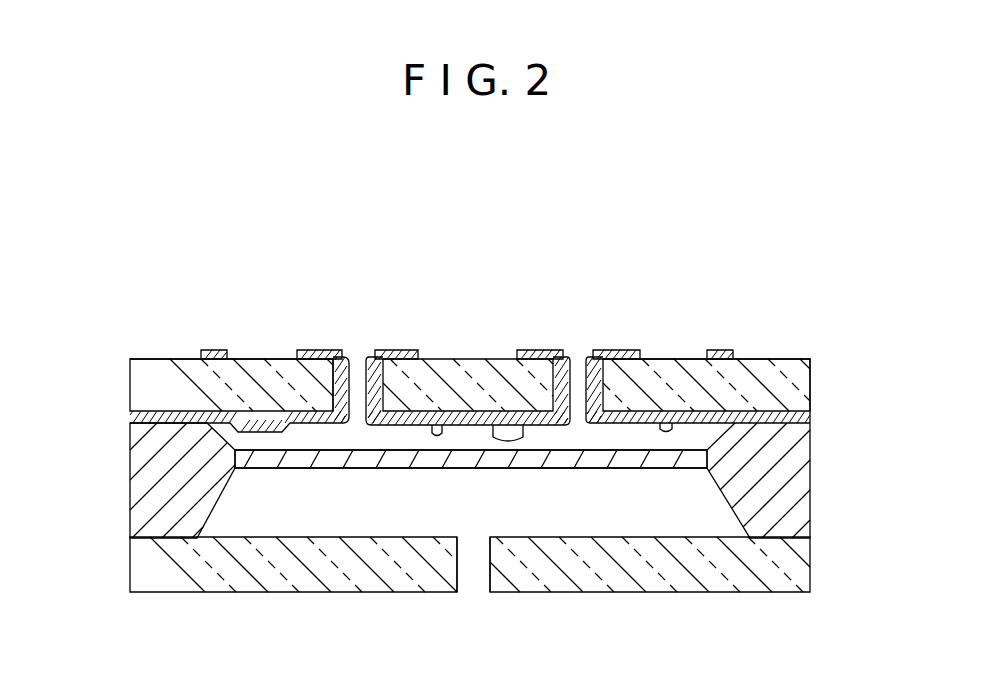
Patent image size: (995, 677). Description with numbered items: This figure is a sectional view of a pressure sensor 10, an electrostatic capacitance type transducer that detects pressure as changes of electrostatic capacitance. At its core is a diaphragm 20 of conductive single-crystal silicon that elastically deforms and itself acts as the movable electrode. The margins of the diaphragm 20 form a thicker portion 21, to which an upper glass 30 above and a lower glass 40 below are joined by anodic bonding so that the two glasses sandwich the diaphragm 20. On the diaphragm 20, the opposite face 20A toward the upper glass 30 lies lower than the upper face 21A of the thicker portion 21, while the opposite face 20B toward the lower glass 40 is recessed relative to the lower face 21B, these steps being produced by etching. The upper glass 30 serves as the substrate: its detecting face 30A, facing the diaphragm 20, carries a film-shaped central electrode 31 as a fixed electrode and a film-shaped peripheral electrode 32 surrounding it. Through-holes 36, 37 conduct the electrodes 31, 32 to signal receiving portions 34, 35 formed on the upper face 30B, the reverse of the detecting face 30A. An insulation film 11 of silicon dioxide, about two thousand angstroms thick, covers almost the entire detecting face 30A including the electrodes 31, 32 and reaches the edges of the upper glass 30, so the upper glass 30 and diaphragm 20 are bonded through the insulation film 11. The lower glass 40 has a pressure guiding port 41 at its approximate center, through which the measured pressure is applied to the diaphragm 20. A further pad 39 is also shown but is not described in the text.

The pressure sensor 10 is at (627, 246).
The insulation film 11 is at (500, 428).
The diaphragm 20 is at (393, 462).
The opposite face 20A is at (520, 448).
The opposite face 20B is at (432, 468).
The thicker portion 21 is at (135, 506).
The upper face 21A is at (188, 387).
The lower face 21B is at (153, 539).
The upper glass 30 is at (793, 382).
The detecting face 30A is at (742, 440).
The upper face 30B is at (780, 358).
The central electrode 31 is at (443, 422).
The peripheral electrode 32 is at (668, 358).
The signal receiving portion 34 is at (406, 350).
The signal receiving portion 35 is at (616, 350).
The through-hole 36 is at (369, 358).
The through-hole 37 is at (588, 360).
The electrode pad 39 is at (215, 350).
The lower glass 40 is at (755, 574).
The pressure guiding port 41 is at (460, 572).